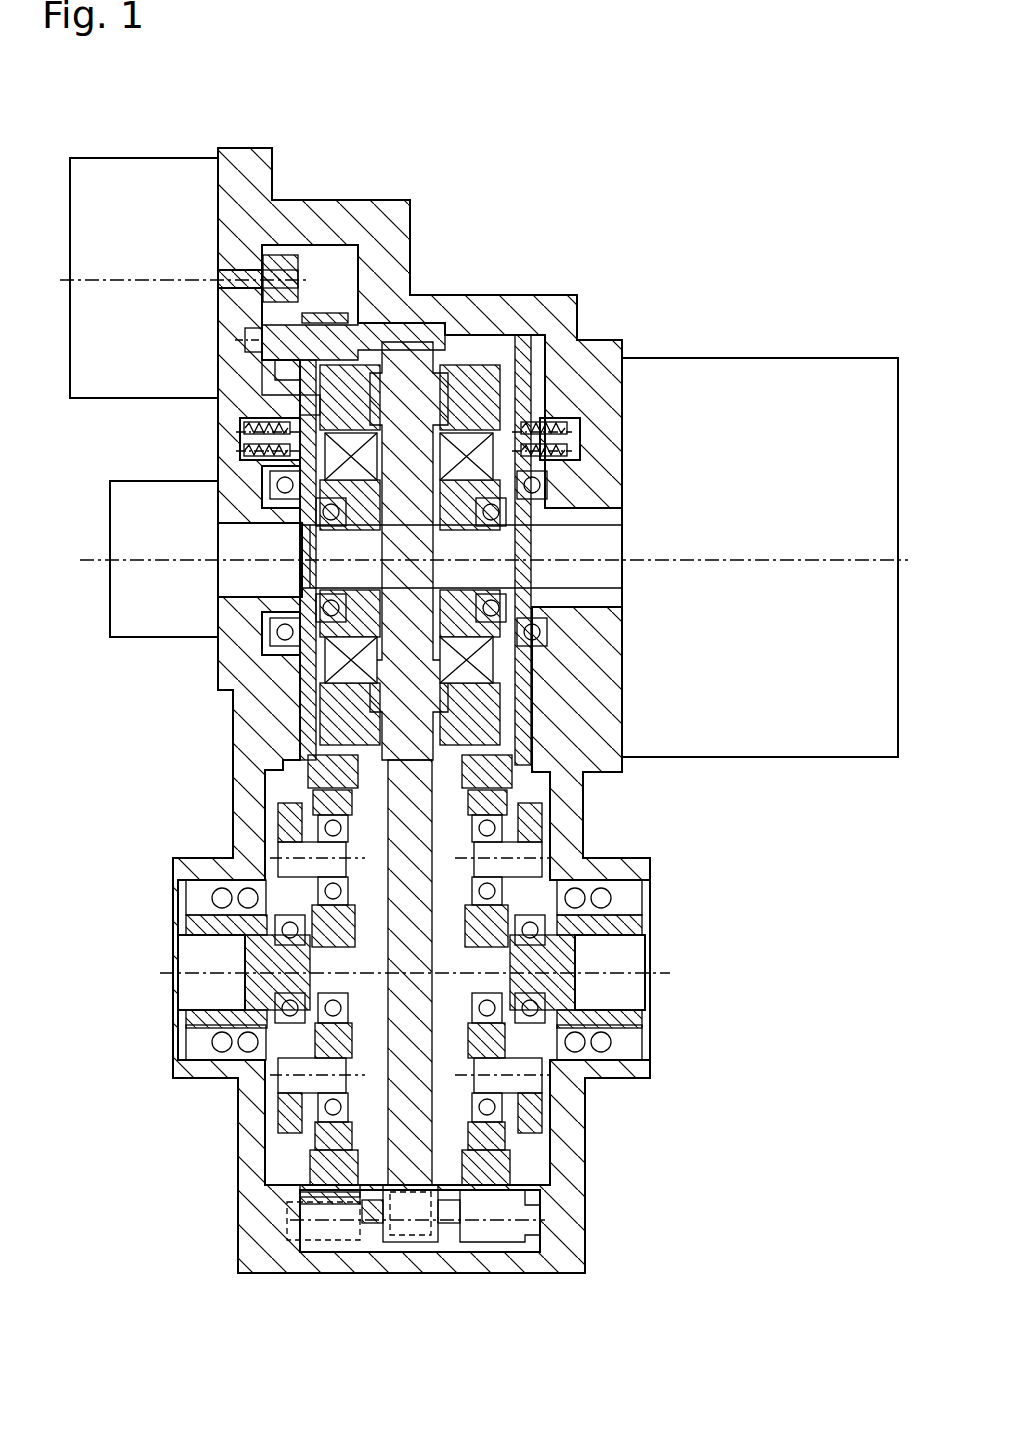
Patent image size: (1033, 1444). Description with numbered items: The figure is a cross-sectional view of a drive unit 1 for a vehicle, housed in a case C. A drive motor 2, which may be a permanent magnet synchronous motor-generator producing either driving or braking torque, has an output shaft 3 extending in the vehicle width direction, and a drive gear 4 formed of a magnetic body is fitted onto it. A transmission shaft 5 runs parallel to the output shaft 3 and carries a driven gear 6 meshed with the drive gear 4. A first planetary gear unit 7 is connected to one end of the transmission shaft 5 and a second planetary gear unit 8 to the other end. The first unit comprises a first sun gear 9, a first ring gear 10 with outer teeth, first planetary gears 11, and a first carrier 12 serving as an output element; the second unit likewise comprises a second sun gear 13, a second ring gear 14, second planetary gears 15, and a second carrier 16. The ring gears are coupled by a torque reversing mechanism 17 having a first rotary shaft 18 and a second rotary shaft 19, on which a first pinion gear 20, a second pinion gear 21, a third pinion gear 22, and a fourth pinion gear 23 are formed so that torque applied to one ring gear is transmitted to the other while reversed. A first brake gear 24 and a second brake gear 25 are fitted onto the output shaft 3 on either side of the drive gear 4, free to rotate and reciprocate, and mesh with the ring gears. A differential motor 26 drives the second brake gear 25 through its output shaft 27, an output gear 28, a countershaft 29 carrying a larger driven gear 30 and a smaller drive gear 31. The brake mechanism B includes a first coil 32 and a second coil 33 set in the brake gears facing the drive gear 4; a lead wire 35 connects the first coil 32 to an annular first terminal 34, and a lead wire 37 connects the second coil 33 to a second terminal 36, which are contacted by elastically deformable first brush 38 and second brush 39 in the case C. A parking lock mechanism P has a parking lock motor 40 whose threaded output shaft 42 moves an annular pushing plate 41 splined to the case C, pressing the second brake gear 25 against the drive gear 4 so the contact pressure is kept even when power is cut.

The drive unit 1 is at (605, 185).
The drive motor 2 is at (798, 380).
The output shaft 3 is at (607, 542).
The drive gear 4 is at (340, 740).
The transmission shaft 5 is at (215, 950).
The driven gear 6 is at (400, 800).
The first planetary gear unit 7 is at (525, 1150).
The second planetary gear unit 8 is at (300, 1158).
The first sun gear 9 is at (590, 995).
The first ring gear 10 is at (520, 1175).
The first planetary gears 11 is at (530, 1130).
The first carrier 12 is at (530, 1110).
The second sun gear 13 is at (330, 985).
The second ring gear 14 is at (325, 1168).
The second planetary gears 15 is at (330, 1138).
The second carrier 16 is at (318, 1125).
The torque reversing mechanism 17 is at (432, 1278).
The first rotary shaft 18 is at (450, 1223).
The second rotary shaft 19 is at (290, 1235).
The first pinion gear 20 is at (500, 1242).
The second pinion gear 21 is at (420, 1242).
The third pinion gear 22 is at (335, 1228).
The fourth pinion gear 23 is at (372, 1225).
The first brake gear 24 is at (500, 745).
The second brake gear 25 is at (318, 715).
The differential motor 26 is at (160, 190).
The output shaft 27 is at (240, 270).
The output gear 28 is at (280, 280).
The countershaft 29 is at (400, 300).
The driven gear 30 is at (275, 385).
The drive gear 31 is at (355, 313).
The first coil 32 is at (468, 440).
The second coil 33 is at (330, 300).
The first terminal 34 is at (492, 440).
The lead wire 35 is at (545, 485).
The second terminal 36 is at (312, 410).
The lead wire 37 is at (262, 375).
The first brush 38 is at (560, 430).
The second brush 39 is at (250, 432).
The parking lock motor 40 is at (160, 520).
The pushing plate 41 is at (280, 485).
The output shaft 42 is at (230, 580).
The parking lock mechanism P is at (150, 650).
The brake mechanism B is at (545, 400).
The case C is at (573, 315).